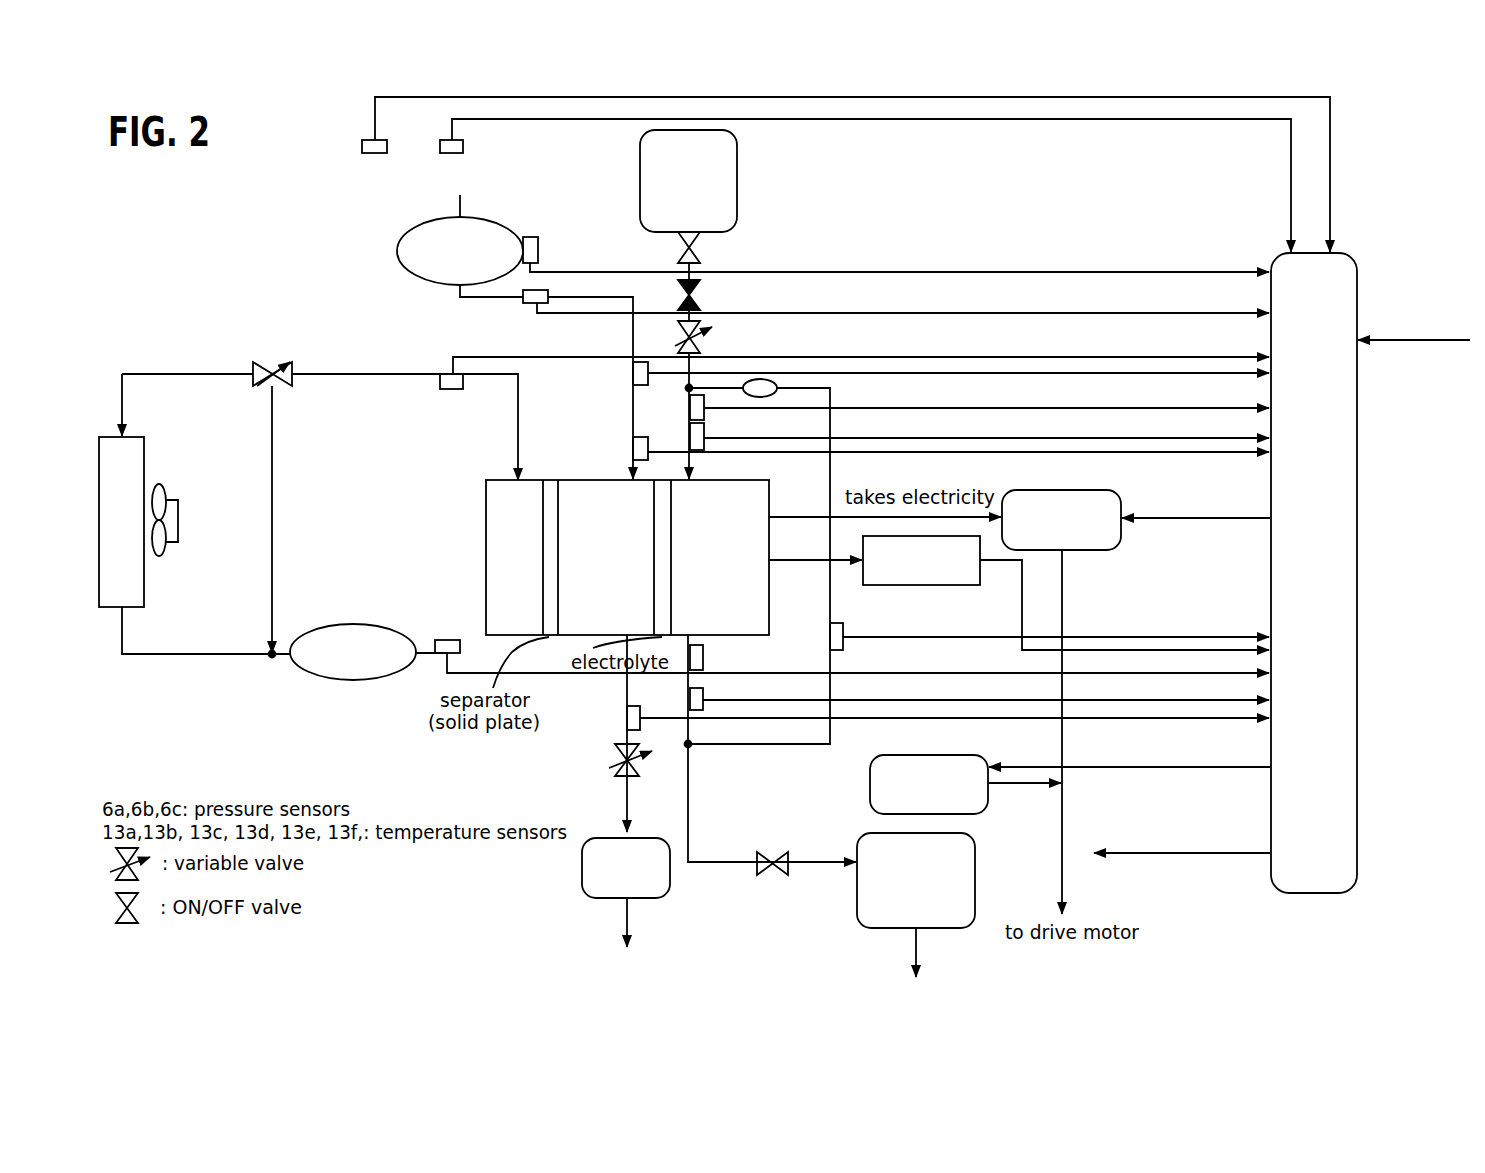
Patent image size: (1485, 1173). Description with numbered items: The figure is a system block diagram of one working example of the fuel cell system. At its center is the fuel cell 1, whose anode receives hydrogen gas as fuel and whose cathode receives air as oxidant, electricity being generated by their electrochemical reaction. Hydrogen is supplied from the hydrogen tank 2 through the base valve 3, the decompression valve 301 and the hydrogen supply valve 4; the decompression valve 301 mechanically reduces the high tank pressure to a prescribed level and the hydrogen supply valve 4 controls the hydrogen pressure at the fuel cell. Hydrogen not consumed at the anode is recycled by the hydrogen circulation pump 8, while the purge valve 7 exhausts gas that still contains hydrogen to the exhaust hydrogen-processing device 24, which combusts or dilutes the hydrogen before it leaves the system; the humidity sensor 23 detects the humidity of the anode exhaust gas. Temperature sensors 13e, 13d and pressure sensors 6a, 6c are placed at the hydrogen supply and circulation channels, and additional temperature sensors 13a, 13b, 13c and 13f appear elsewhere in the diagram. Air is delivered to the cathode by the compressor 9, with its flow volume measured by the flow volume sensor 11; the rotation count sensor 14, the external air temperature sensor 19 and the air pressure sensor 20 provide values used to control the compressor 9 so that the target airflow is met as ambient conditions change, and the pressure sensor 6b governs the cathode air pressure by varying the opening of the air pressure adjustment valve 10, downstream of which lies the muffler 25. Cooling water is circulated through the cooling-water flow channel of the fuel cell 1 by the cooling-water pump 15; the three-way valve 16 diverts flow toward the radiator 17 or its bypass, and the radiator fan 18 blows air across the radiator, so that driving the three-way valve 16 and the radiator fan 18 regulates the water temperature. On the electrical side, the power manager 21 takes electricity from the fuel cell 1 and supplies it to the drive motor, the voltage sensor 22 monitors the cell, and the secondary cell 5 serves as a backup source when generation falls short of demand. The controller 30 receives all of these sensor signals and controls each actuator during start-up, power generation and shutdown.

The fuel cell 1 is at (486, 533).
The hydrogen tank 2 is at (737, 183).
The base valve 3 is at (700, 254).
The decompression valve 301 is at (700, 300).
The hydrogen supply valve 4 is at (700, 343).
The secondary cell 5 is at (870, 780).
The pressure sensor 6a is at (963, 436).
The pressure sensor 6b is at (933, 450).
The pressure sensor 6c is at (713, 658).
The purge valve 7 is at (772, 851).
The hydrogen circulation pump 8 is at (777, 390).
The compressor 9 is at (397, 251).
The air pressure adjustment valve 10 is at (614, 760).
The flow volume sensor 11 is at (530, 305).
The temperature sensor 13a is at (435, 367).
The temperature sensor 13b is at (842, 642).
The temperature sensor 13c is at (927, 719).
The temperature sensor 13d is at (959, 699).
The temperature sensor 13e is at (960, 406).
The temperature sensor 13f is at (932, 375).
The rotation count sensor 14 is at (535, 237).
The cooling-water pump 15 is at (352, 624).
The three-way valve 16 is at (276, 361).
The radiator 17 is at (144, 455).
The radiator fan 18 is at (160, 556).
The external air temperature sensor 19 is at (362, 146).
The air pressure sensor 20 is at (463, 146).
The power manager 21 is at (1121, 507).
The voltage sensor 22 is at (928, 586).
The humidity sensor 23 is at (843, 640).
The exhaust hydrogen-processing device 24 is at (975, 862).
The muffler 25 is at (582, 866).
The controller 30 is at (1357, 468).